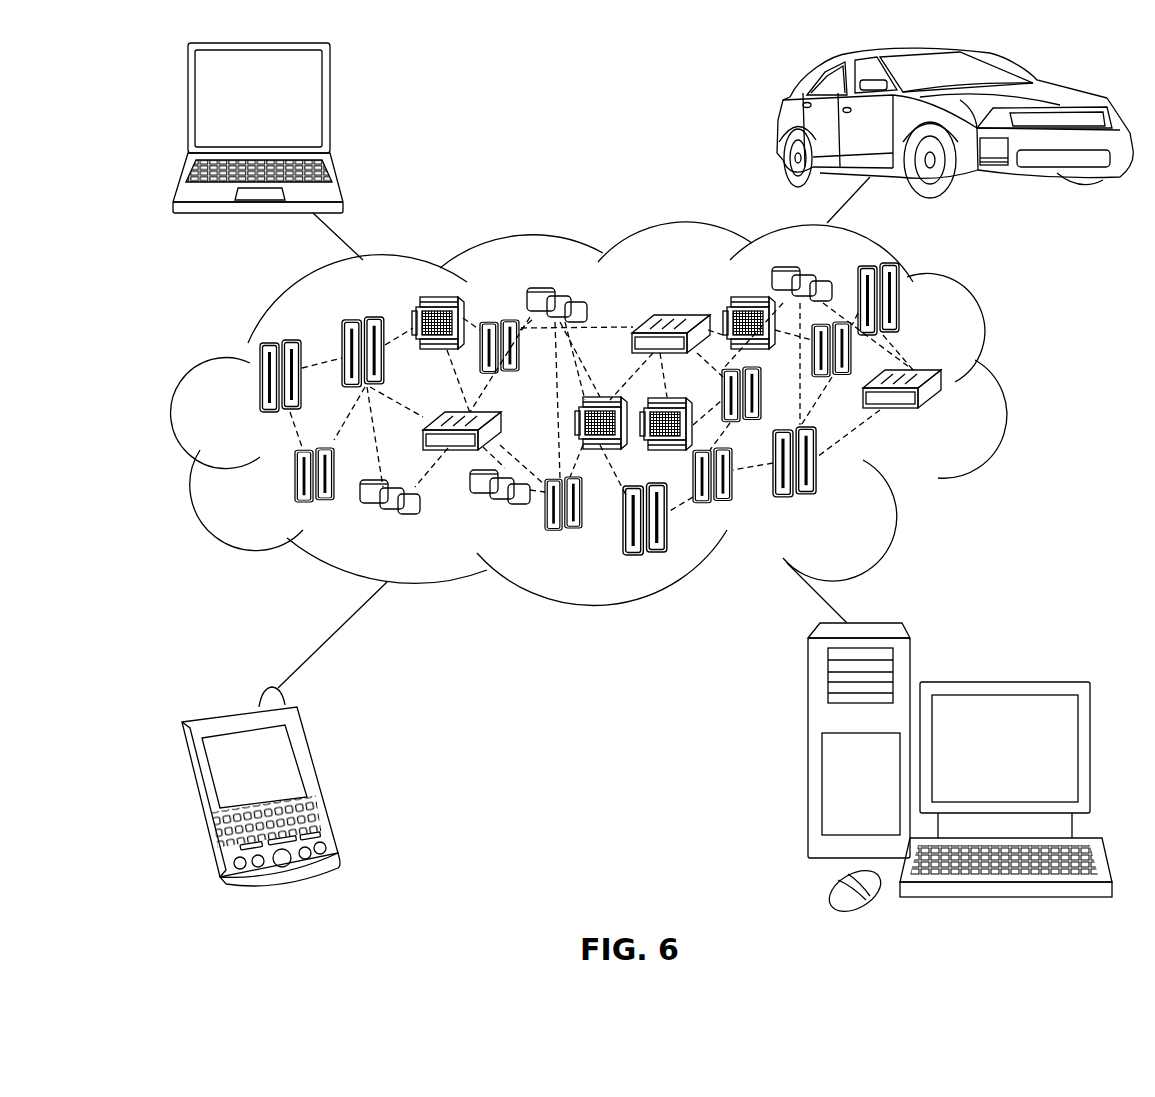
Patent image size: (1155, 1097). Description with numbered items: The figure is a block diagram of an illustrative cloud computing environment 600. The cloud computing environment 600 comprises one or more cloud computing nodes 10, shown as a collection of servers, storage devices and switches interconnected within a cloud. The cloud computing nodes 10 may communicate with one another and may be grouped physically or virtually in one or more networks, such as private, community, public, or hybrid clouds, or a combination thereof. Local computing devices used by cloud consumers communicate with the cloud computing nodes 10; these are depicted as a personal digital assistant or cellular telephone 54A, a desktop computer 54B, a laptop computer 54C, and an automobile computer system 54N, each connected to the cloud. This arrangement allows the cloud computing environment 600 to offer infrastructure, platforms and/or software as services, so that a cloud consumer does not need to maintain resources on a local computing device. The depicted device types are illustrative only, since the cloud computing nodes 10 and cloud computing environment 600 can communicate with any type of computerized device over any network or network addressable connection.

The laptop computer 54C is at (330, 108).
The automobile computer system 54N is at (780, 124).
The personal digital assistant or cellular telephone 54A is at (322, 780).
The desktop computer 54B is at (1002, 682).
The cloud computing environment 600 is at (1000, 392).
The cloud computing nodes 10 is at (950, 420).